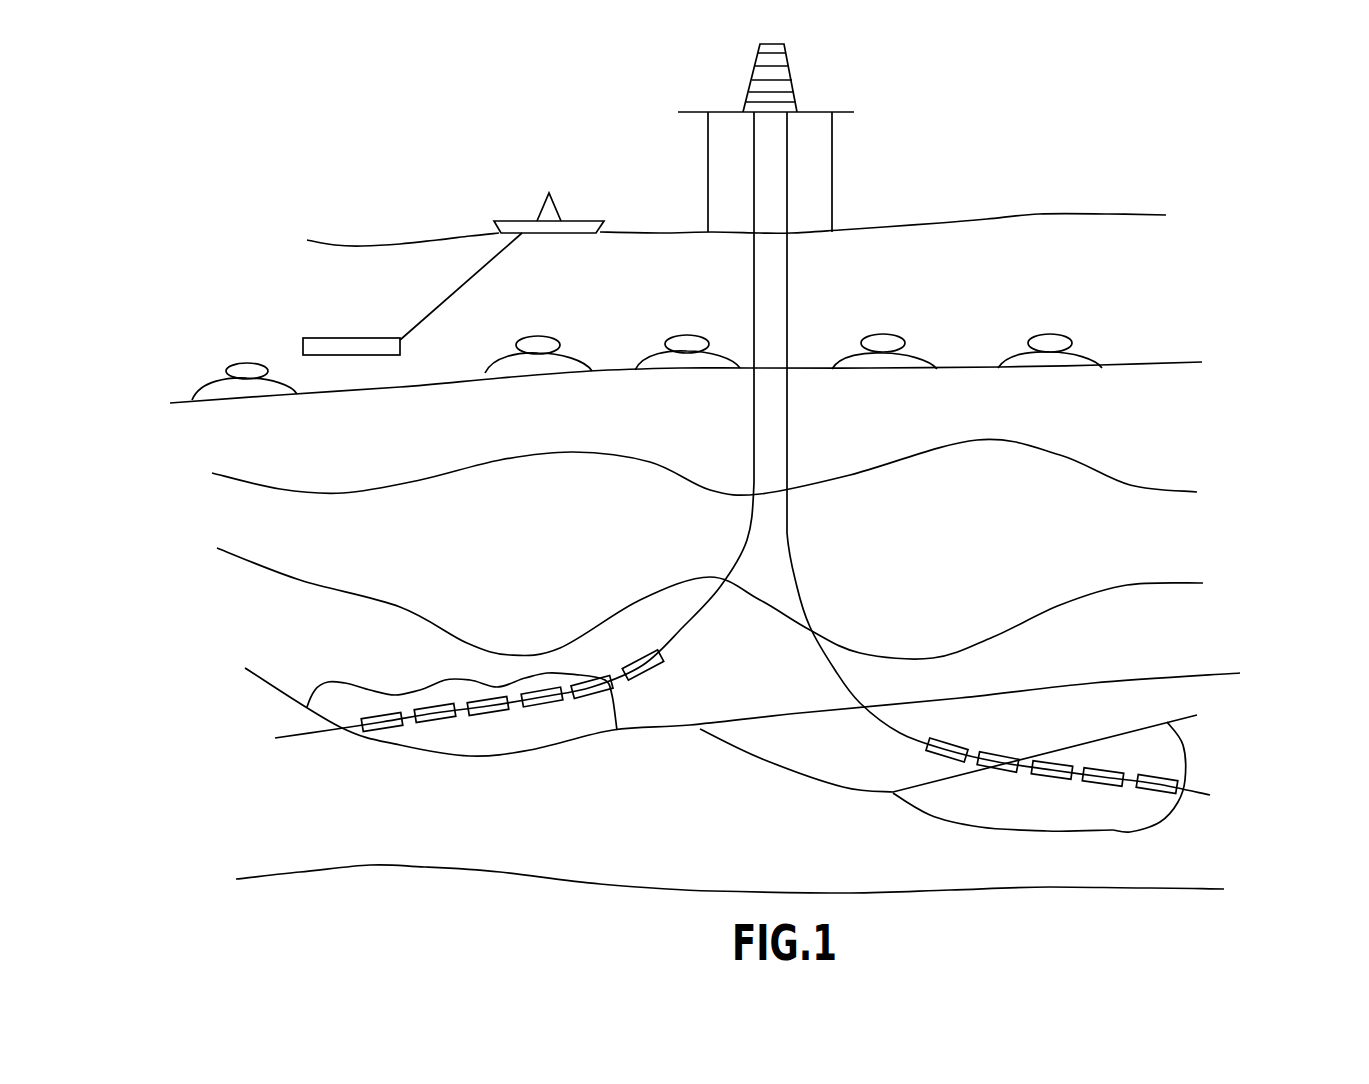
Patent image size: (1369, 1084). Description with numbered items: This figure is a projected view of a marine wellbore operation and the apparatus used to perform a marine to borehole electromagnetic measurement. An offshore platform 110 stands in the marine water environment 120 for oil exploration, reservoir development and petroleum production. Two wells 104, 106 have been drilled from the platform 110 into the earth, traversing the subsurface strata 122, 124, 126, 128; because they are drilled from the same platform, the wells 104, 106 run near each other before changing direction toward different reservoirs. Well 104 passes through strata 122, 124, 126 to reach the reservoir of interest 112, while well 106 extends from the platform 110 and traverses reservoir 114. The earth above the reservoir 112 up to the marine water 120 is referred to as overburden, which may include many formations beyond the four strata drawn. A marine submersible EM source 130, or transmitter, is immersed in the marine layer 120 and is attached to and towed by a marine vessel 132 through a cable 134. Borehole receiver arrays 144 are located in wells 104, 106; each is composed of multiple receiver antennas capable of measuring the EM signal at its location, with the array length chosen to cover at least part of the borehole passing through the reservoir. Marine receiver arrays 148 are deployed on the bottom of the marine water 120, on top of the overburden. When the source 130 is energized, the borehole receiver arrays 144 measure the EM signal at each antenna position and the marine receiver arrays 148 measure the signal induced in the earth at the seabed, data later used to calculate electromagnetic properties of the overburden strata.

The well 104 is at (740, 545).
The well 106 is at (795, 580).
The offshore platform 110 is at (827, 112).
The reservoir of interest 112 is at (462, 734).
The reservoir 114 is at (1005, 806).
The marine water environment 120 is at (196, 331).
The subsurface stratum 122 is at (204, 442).
The subsurface stratum 124 is at (221, 522).
The subsurface stratum 126 is at (246, 629).
The subsurface stratum 128 is at (1167, 707).
The marine submersible EM source 130 is at (317, 343).
The marine vessel 132 is at (494, 221).
The cable 134 is at (438, 303).
The borehole receiver arrays 144 is at (542, 705).
The marine receiver arrays 148 is at (1080, 355).